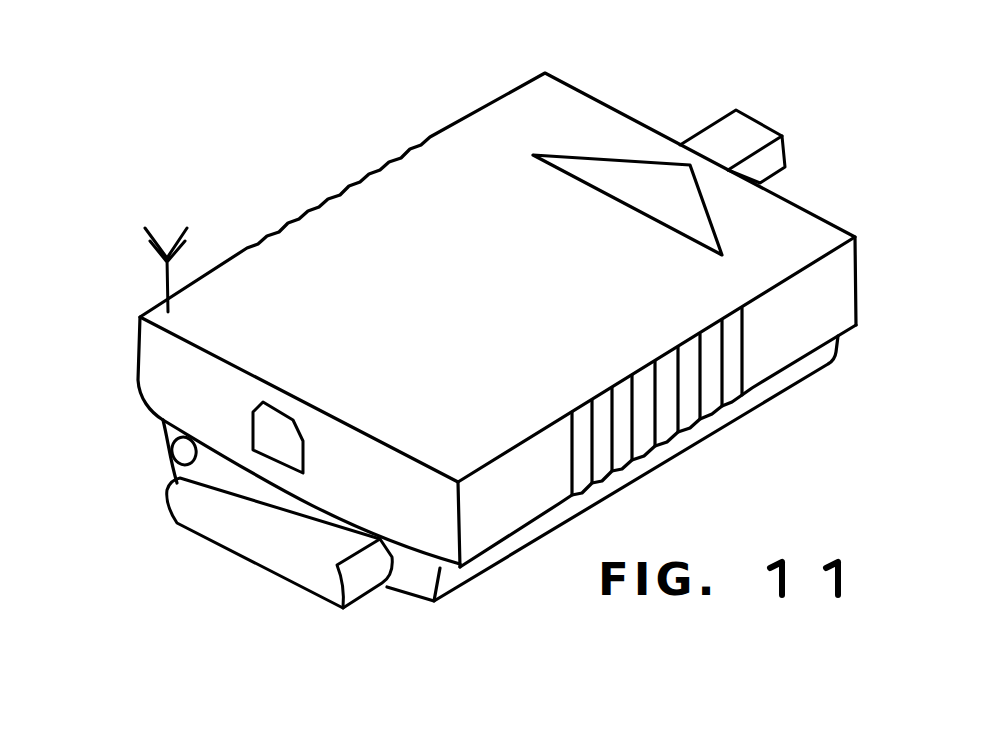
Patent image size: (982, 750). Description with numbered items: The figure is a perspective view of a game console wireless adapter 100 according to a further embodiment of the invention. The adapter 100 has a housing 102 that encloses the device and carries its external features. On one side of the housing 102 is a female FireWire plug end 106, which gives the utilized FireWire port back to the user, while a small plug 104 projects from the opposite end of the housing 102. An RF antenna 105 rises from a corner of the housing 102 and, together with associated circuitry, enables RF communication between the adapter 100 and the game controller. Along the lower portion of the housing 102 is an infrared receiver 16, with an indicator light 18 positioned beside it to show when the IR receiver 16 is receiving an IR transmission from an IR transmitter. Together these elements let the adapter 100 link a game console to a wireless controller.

The wireless adapter 100 is at (497, 305).
The housing 102 is at (395, 168).
The connector 104 is at (750, 133).
The RF antenna 105 is at (138, 234).
The female IEEE 1394 FireWire plug end 106 is at (267, 433).
The indicator light 18 is at (173, 463).
The infrared (IR) receiver 16 is at (200, 538).